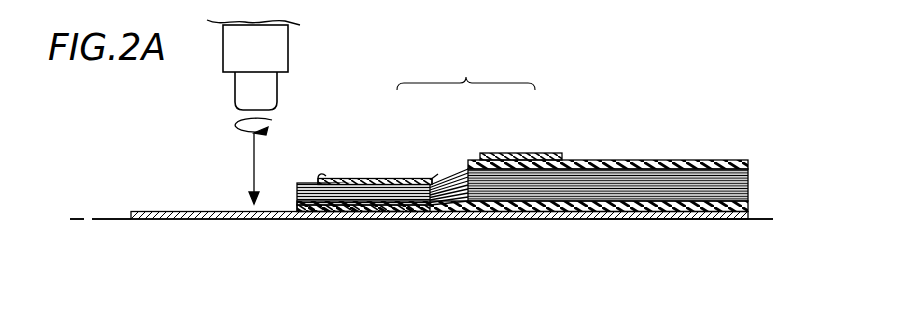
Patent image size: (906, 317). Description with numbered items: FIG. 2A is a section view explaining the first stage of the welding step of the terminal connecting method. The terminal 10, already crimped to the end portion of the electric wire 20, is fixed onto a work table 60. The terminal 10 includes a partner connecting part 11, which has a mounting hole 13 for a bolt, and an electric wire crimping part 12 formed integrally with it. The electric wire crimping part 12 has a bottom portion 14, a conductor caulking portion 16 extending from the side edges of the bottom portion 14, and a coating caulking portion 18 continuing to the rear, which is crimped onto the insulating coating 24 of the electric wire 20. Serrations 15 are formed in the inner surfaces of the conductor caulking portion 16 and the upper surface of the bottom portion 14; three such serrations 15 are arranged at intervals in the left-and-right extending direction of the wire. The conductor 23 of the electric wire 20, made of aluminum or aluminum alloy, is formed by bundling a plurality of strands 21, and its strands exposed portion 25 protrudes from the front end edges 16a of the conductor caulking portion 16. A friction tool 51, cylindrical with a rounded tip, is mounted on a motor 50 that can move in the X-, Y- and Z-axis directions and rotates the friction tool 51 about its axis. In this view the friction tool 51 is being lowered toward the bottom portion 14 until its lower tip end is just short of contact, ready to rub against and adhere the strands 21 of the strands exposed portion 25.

The terminal 10 is at (506, 228).
The partner connecting part 11 is at (147, 211).
The electric wire crimping part 12 is at (466, 71).
The mounting hole 13 is at (172, 221).
The bottom portion 14 is at (440, 184).
The serrations 15 is at (346, 183).
The conductor caulking portion 16 is at (398, 180).
The front end edges 16a is at (318, 178).
The coating caulking portion 18 is at (522, 153).
The electric wire 20 is at (602, 161).
The strands 21 is at (302, 182).
The conductor 23 is at (672, 183).
The insulating coating 24 is at (615, 220).
The strands exposed portion 25 is at (294, 185).
The motor 50 is at (275, 45).
The friction tool 51 is at (270, 88).
The work table 60 is at (105, 216).